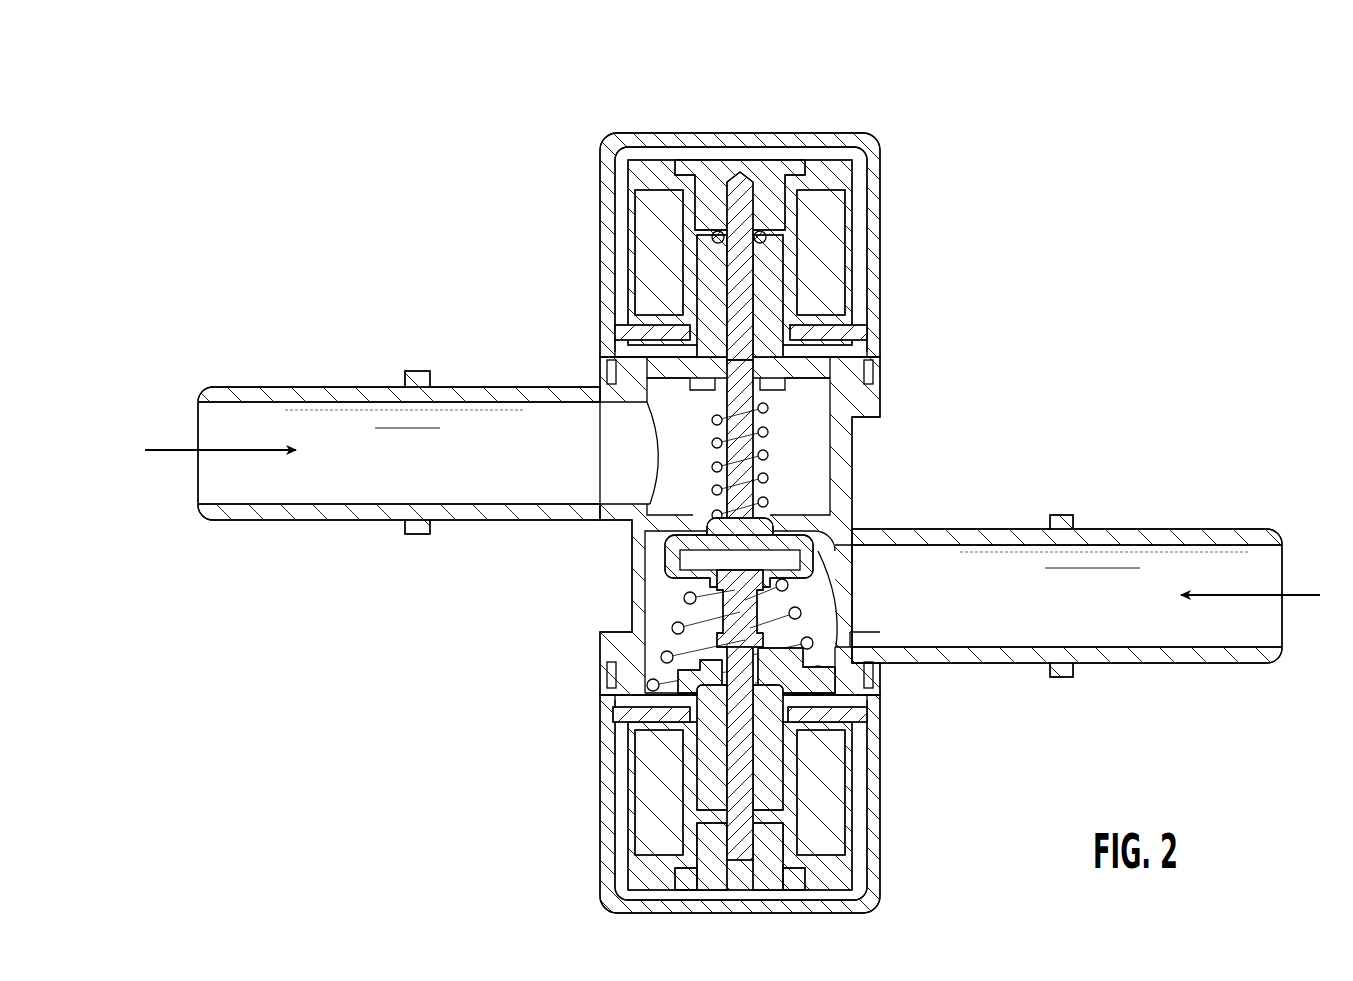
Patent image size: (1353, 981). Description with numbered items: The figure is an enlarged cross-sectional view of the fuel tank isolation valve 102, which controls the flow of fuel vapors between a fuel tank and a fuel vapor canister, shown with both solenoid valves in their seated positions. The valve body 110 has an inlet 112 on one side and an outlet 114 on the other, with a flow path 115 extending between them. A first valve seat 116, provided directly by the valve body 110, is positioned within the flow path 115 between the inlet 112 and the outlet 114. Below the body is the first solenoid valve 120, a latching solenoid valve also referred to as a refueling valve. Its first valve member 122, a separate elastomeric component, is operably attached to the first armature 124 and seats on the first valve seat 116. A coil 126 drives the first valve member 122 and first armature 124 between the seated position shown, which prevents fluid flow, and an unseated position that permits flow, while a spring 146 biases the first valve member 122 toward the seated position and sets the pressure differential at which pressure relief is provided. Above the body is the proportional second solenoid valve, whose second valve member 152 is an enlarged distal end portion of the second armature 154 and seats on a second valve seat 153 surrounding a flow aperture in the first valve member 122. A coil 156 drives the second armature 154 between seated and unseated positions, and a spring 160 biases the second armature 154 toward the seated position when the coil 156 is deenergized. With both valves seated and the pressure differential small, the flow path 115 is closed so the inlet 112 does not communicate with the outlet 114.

The fuel tank isolation valve 102 is at (921, 271).
The valve body 110 is at (838, 452).
The inlet 112 is at (343, 420).
The outlet 114 is at (1208, 568).
The flow path 115 is at (500, 468).
The first valve seat 116 is at (822, 603).
The first solenoid valve 120 is at (920, 807).
The first valve member 122 is at (654, 570).
The first armature 124 is at (742, 752).
The coil 126 is at (828, 790).
The spring 146 is at (810, 642).
The second valve member 152 is at (765, 525).
The second valve seat 153 is at (772, 522).
The second armature 154 is at (740, 205).
The coil 156 is at (820, 218).
The spring 160 is at (766, 432).